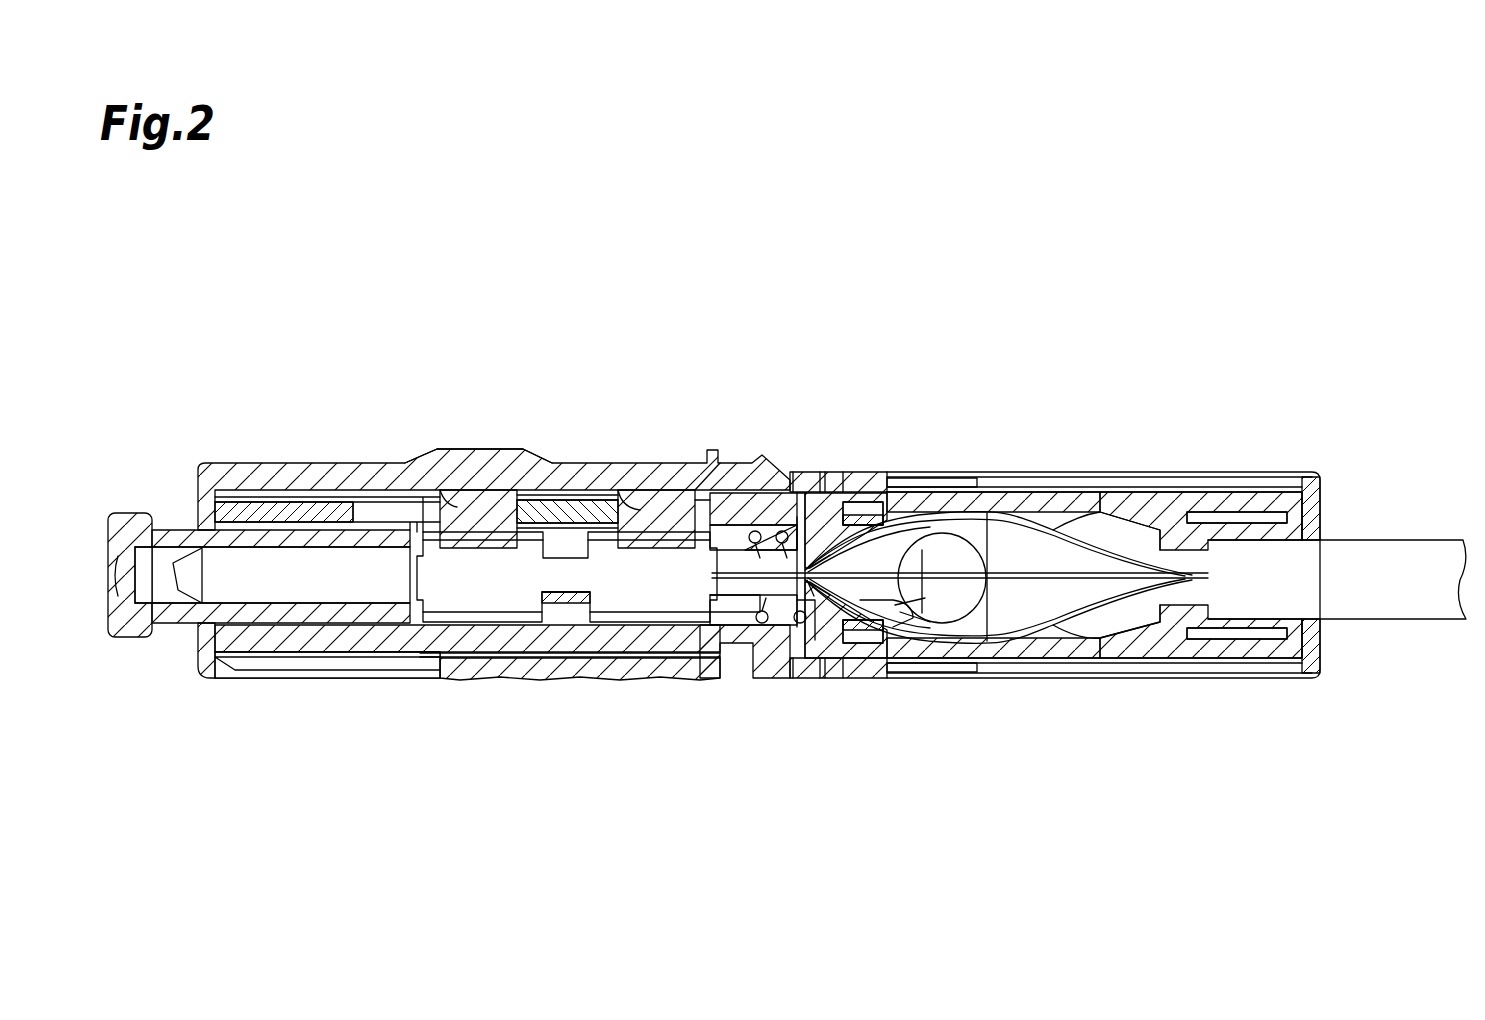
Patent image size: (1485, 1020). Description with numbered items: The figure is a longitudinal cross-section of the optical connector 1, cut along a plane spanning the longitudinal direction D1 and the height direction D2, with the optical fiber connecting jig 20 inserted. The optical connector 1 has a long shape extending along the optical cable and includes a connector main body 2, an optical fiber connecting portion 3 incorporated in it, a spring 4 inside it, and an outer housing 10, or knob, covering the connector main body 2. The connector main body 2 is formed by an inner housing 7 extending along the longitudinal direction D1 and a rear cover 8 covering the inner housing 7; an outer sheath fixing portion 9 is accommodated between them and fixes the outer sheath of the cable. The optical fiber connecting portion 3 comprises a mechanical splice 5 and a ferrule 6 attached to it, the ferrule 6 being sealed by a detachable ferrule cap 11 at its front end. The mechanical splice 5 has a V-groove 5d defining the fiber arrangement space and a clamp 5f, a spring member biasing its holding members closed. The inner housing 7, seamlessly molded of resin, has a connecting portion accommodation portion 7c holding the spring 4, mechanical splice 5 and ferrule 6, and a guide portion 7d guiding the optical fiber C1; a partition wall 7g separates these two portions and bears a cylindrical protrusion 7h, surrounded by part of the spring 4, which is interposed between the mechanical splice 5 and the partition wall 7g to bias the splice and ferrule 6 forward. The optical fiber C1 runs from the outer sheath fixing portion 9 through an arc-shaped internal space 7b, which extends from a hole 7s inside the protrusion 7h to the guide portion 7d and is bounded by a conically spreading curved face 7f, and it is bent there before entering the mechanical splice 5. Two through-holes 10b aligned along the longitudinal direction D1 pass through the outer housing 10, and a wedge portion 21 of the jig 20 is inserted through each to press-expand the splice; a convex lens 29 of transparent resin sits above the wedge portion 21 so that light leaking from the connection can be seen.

The optical connector 1 is at (983, 337).
The connector main body 2 is at (963, 458).
The optical fiber connecting portion 3 is at (812, 490).
The spring 4 is at (764, 624).
The mechanical splice 5 is at (734, 532).
The V-groove 5d is at (745, 612).
The clamp 5f is at (530, 618).
The ferrule 6 is at (323, 582).
The inner housing 7 is at (903, 484).
The internal space 7b is at (888, 535).
The connecting portion accommodation portion 7c is at (808, 600).
The guide portion 7d is at (876, 600).
The curved face 7f is at (906, 620).
The partition wall 7g is at (798, 536).
The protrusion 7h is at (812, 627).
The hole 7s is at (828, 592).
The rear cover 8 is at (1040, 472).
The outer sheath fixing portion 9 is at (1240, 525).
The outer housing 10 is at (353, 496).
The through-hole 10b is at (455, 490).
The ferrule cap 11 is at (133, 630).
The optical fiber connecting jig 20 is at (583, 454).
The wedge portion 21 is at (478, 548).
The convex lens 29 is at (508, 458).
The optical fiber C1 is at (1013, 495).
The longitudinal direction D1 is at (1259, 695).
The height direction D2 is at (1343, 443).